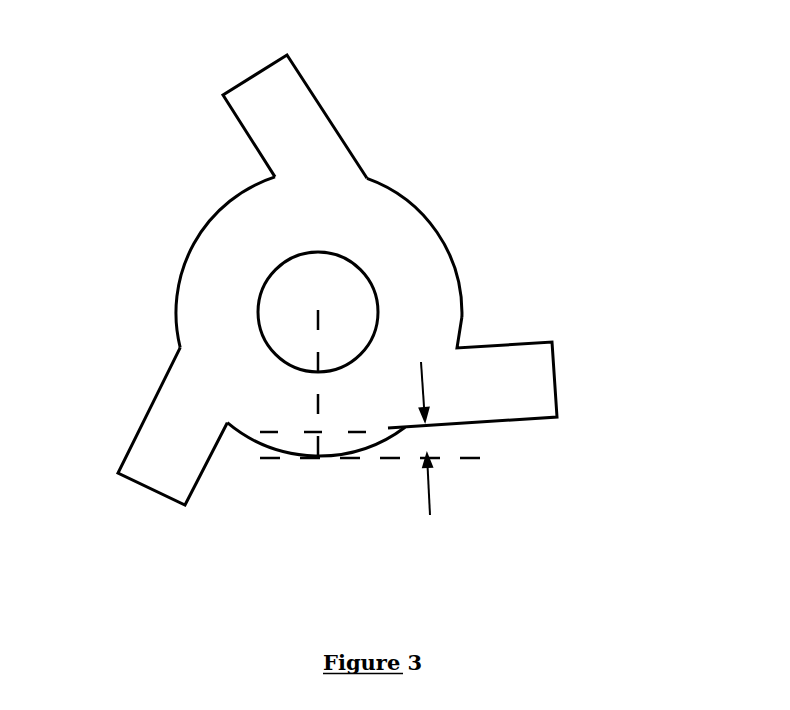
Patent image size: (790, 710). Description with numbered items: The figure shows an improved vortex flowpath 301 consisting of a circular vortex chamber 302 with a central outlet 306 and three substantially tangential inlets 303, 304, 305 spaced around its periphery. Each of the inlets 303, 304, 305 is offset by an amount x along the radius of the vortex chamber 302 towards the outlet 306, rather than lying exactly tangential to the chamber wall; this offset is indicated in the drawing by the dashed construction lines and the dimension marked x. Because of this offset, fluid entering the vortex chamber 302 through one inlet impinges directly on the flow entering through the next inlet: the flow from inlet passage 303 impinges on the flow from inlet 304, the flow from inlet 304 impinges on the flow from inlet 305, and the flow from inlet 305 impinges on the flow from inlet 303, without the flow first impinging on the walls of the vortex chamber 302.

The improved flowpath 301 is at (326, 306).
The vortex chamber 302 is at (442, 294).
The inlet passage 303 is at (154, 416).
The inlet 304 is at (267, 118).
The inlet 305 is at (529, 382).
The outlet 306 is at (342, 278).